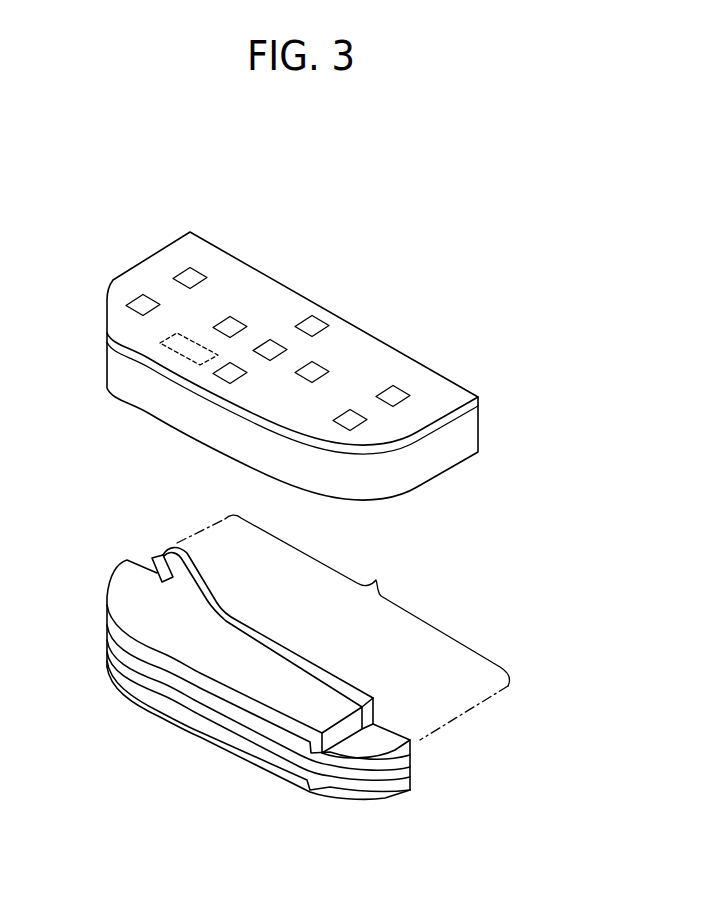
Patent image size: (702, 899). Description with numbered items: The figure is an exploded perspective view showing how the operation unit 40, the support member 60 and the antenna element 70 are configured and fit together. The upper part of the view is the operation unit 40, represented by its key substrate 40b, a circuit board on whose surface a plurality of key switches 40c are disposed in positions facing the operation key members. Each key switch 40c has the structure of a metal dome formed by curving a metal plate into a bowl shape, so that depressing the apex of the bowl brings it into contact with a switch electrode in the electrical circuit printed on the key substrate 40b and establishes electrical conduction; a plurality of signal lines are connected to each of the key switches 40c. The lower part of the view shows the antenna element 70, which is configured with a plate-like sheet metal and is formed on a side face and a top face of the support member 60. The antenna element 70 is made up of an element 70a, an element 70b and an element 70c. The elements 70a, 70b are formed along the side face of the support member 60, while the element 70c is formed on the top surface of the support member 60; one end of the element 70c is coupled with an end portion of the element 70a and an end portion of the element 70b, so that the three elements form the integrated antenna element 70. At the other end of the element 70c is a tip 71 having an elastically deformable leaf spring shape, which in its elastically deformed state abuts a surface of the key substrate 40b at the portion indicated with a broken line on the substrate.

The operation unit 40 is at (380, 263).
The key substrate 40b is at (437, 388).
The key switches 40c is at (224, 326).
The support member 60 is at (410, 809).
The antenna element 70 is at (438, 755).
The element 70a is at (252, 756).
The element 70b is at (198, 699).
The element 70c is at (308, 637).
The tip 71 is at (235, 603).